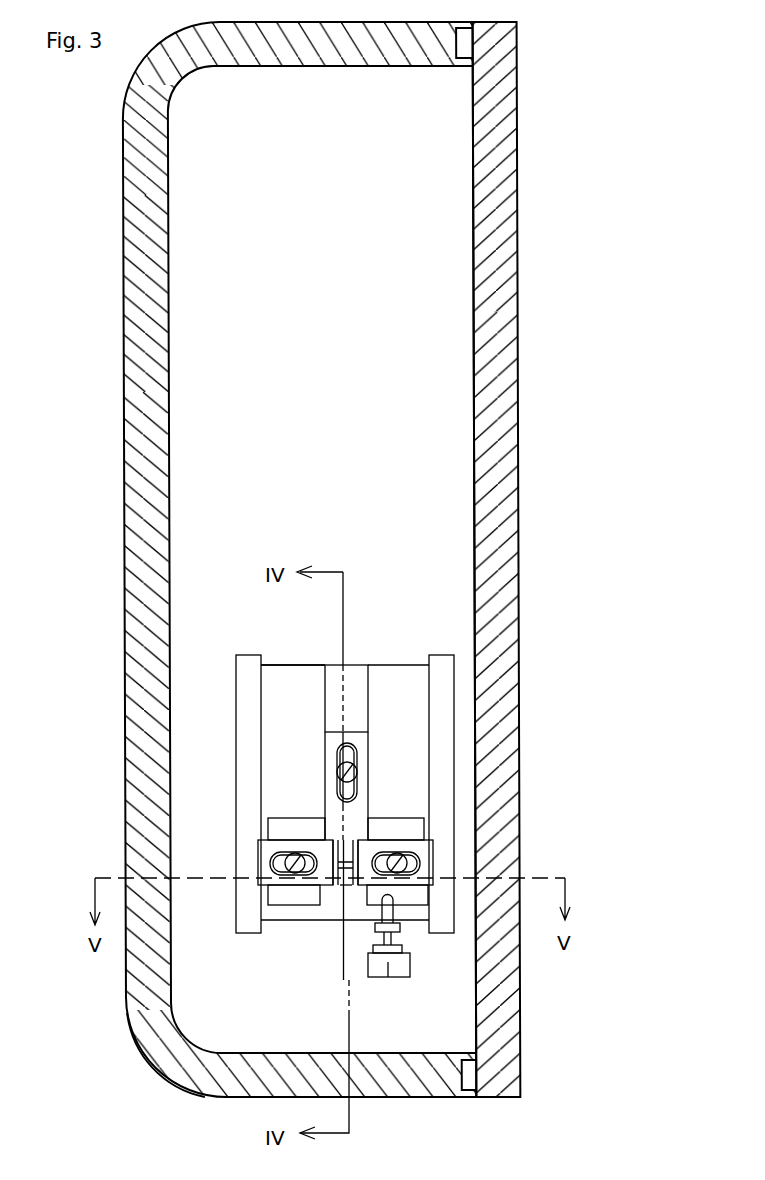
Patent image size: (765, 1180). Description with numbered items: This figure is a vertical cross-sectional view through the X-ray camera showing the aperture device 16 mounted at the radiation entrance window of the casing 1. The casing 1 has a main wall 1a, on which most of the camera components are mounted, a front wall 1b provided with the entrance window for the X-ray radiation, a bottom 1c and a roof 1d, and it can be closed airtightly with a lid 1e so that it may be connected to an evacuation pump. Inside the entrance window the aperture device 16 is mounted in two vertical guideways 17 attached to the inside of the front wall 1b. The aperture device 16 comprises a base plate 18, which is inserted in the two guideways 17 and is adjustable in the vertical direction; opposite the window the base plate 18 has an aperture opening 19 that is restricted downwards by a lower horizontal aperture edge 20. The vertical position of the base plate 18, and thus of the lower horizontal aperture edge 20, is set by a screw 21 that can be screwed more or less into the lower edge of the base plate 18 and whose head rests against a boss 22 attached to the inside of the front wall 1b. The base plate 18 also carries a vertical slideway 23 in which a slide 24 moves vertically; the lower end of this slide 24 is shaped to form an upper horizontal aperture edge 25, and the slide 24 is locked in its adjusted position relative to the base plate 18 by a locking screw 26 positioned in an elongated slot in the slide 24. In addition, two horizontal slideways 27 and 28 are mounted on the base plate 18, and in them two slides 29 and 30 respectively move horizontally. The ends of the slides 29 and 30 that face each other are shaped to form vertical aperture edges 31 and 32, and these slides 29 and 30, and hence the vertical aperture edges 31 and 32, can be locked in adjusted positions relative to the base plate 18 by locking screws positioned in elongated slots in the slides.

The casing 1 is at (343, 228).
The main wall 1a is at (145, 427).
The front wall 1b is at (428, 185).
The bottom 1c is at (423, 1078).
The roof 1d is at (308, 50).
The lid 1e is at (492, 362).
The aperture device 16 is at (402, 680).
The vertical guideways 17 is at (248, 680).
The base plate 18 is at (297, 685).
The aperture opening 19 is at (352, 885).
The lower horizontal aperture edge 20 is at (342, 885).
The screw 21 is at (395, 935).
The boss 22 is at (388, 977).
The vertical slideway 23 is at (360, 680).
The slide 24 is at (358, 758).
The upper horizontal aperture edge 25 is at (338, 850).
The locking screw 26 is at (355, 753).
The horizontal slideway 27 is at (280, 900).
The horizontal slideway 28 is at (415, 900).
The slide 29 is at (295, 873).
The slide 30 is at (415, 845).
The vertical aperture edge 31 is at (331, 885).
The vertical aperture edge 32 is at (362, 855).